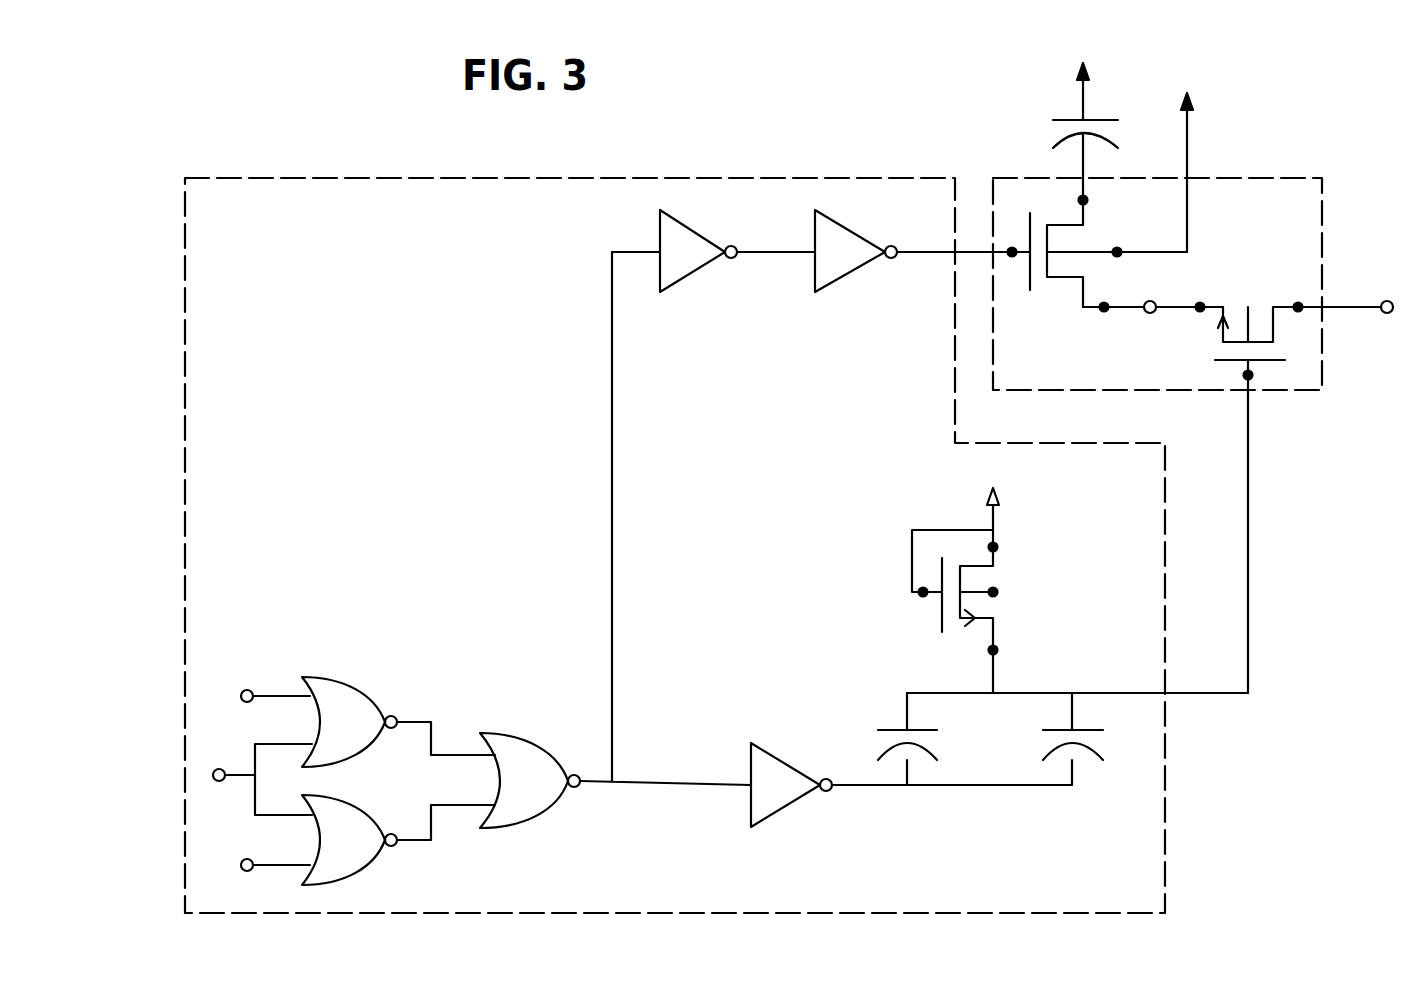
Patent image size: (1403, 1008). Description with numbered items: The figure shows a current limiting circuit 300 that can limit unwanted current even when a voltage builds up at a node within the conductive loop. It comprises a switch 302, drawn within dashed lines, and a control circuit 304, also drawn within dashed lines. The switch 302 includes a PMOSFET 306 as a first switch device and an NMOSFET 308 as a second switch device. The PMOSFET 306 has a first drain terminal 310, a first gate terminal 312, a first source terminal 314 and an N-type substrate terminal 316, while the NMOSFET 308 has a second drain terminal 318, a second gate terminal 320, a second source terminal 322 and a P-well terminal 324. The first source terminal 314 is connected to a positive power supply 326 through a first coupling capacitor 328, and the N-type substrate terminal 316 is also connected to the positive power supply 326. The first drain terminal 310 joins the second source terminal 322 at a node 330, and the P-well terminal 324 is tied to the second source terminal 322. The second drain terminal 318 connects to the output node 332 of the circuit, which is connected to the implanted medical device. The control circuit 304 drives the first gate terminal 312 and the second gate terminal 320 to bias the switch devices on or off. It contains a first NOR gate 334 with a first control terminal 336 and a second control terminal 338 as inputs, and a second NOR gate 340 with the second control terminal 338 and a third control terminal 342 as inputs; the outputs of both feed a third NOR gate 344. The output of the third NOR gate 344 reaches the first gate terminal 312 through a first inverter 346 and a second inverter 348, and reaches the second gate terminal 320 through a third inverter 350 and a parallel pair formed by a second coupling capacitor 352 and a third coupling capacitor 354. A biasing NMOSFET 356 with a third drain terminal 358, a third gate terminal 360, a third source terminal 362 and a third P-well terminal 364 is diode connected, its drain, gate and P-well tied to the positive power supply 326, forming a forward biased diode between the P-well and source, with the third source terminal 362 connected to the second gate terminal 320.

The current limiting circuit 300 is at (605, 154).
The switch 302 is at (1257, 175).
The control circuit 304 is at (711, 170).
The PMOSFET 306 is at (1091, 283).
The NMOSFET 308 is at (1276, 451).
The first drain terminal 310 is at (1114, 299).
The first gate terminal 312 is at (1012, 243).
The first source terminal 314 is at (1091, 200).
The N-type substrate terminal 316 is at (1112, 220).
The second drain terminal 318 is at (1294, 304).
The second gate terminal 320 is at (1258, 376).
The second source terminal 322 is at (1197, 319).
The P-well terminal 324 is at (1248, 303).
The positive power supply 326 is at (977, 497).
The first coupling capacitor 328 is at (1044, 133).
The node 330 is at (1143, 319).
The output node 332 is at (1383, 318).
The first NOR gate 334 is at (337, 674).
The first control terminal 336 is at (249, 684).
The second control terminal 338 is at (220, 763).
The second NOR gate 340 is at (388, 800).
The third control terminal 342 is at (238, 860).
The third NOR gate 344 is at (550, 725).
The first inverter 346 is at (688, 289).
The second inverter 348 is at (844, 287).
The third inverter 350 is at (739, 754).
The second coupling capacitor 352 is at (871, 740).
The third coupling capacitor 354 is at (1102, 742).
The biasing NMOSFET 356 is at (994, 599).
The third drain terminal 358 is at (1004, 545).
The third gate terminal 360 is at (917, 601).
The third source terminal 362 is at (1004, 649).
The third P-well terminal 364 is at (1004, 597).